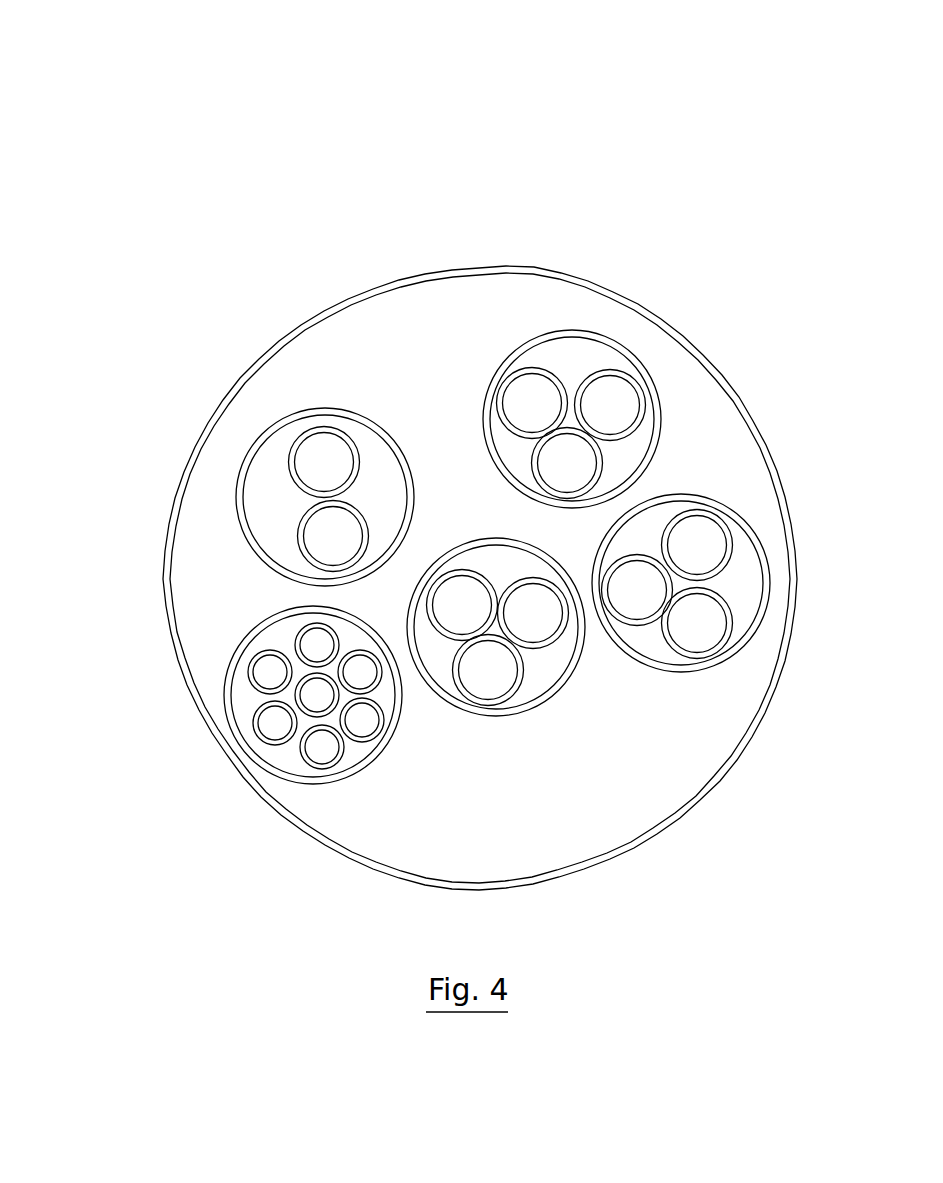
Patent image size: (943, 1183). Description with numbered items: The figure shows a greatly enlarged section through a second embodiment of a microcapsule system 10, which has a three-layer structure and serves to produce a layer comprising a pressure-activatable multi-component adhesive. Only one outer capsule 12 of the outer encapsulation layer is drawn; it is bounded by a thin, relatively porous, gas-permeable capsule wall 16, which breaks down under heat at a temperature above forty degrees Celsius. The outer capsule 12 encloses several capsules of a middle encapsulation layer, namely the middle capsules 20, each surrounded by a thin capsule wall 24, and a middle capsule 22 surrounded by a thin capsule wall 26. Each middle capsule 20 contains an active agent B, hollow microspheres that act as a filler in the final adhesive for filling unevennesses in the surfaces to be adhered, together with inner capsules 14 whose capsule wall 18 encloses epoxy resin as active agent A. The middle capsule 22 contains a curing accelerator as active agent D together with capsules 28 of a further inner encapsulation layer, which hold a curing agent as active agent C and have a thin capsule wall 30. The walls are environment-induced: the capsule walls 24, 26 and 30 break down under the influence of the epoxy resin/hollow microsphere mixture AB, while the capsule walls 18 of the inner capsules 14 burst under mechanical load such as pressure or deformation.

The microcapsule system 10 is at (486, 132).
The outer capsule 12 is at (362, 328).
The inner capsule 14 is at (632, 413).
The capsule wall 16 is at (403, 283).
The capsule wall 18 is at (633, 431).
The middle capsule 20 is at (605, 362).
The middle capsule 22 is at (280, 760).
The capsule wall 24 is at (643, 373).
The capsule wall 26 is at (302, 778).
The capsule 28 is at (262, 660).
The capsule wall 30 is at (250, 668).